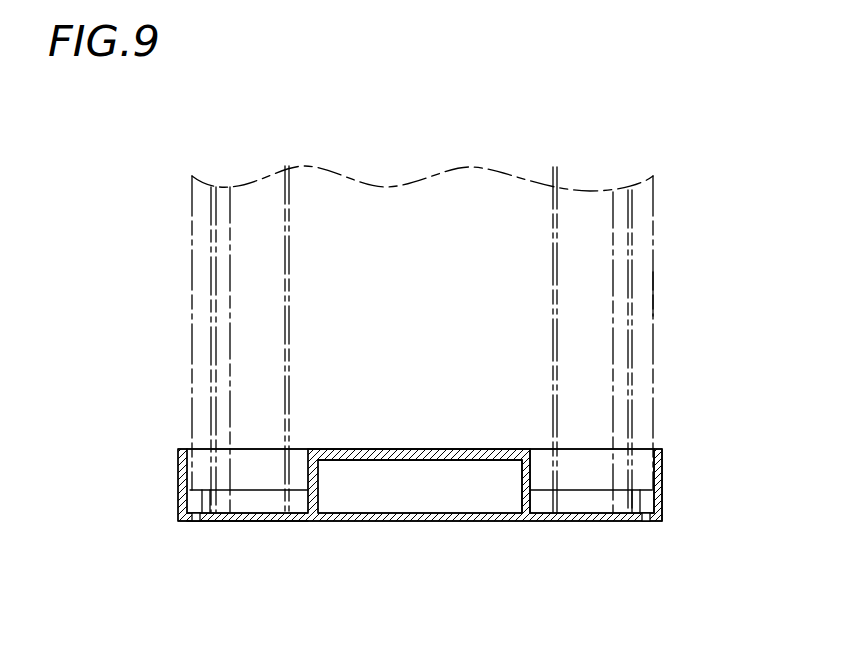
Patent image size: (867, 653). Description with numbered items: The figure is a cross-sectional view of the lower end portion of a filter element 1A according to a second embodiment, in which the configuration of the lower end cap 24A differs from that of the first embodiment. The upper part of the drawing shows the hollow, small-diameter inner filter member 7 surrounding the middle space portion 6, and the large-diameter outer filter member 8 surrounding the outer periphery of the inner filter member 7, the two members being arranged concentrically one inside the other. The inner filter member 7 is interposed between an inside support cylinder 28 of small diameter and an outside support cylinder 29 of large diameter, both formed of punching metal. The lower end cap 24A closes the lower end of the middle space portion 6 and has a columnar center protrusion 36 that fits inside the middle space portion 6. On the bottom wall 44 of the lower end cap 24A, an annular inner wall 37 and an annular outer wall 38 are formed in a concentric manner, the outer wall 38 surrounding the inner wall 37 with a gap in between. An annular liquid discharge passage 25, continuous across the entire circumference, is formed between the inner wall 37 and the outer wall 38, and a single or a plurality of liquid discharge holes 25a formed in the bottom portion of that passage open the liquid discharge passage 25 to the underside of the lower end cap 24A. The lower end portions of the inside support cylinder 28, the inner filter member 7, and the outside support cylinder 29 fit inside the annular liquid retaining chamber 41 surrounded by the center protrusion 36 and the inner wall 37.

The filter element 1A is at (583, 140).
The middle space portion 6 is at (553, 222).
The inner filter member 7 is at (588, 261).
The outer filter member 8 is at (640, 314).
The inside support cylinder 28 is at (287, 266).
The outside support cylinder 29 is at (211, 386).
The center protrusion 36 is at (380, 452).
The liquid discharge passage 25 is at (195, 498).
The liquid discharge hole 25a is at (191, 522).
The bottom wall 44 is at (270, 521).
The lower end cap 24A is at (438, 532).
The liquid retaining chamber 41 is at (534, 500).
The inner wall 37 is at (645, 500).
The outer wall 38 is at (662, 462).